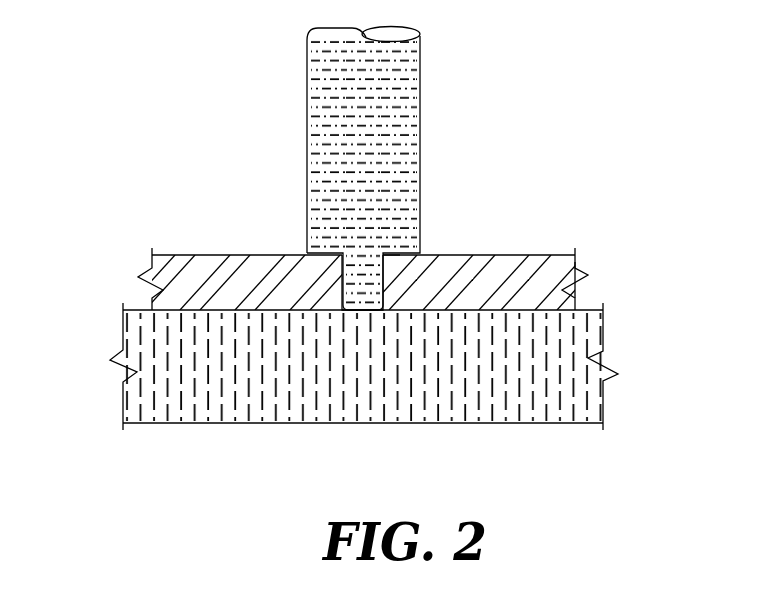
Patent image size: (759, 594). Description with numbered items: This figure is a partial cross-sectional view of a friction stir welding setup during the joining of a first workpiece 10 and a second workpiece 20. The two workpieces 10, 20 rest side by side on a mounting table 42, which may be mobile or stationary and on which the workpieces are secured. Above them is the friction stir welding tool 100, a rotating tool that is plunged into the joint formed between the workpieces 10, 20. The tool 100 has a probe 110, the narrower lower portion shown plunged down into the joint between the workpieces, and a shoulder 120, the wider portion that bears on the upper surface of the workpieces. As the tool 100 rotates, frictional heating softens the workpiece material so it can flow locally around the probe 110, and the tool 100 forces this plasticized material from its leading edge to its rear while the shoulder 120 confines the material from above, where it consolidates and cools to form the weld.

The friction stir welding tool 100 is at (307, 65).
The first workpiece 10 is at (143, 287).
The second workpiece 20 is at (590, 283).
The probe 110 is at (340, 284).
The shoulder 120 is at (399, 252).
The mounting table 42 is at (207, 422).